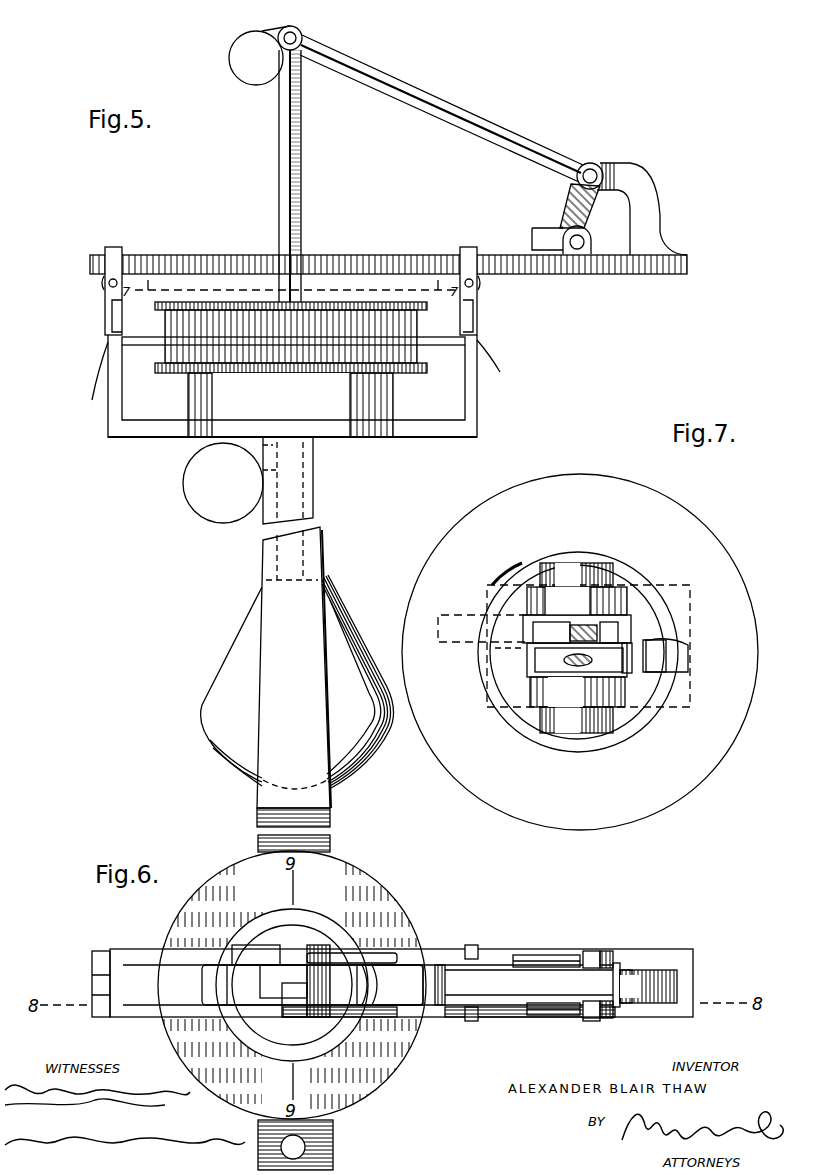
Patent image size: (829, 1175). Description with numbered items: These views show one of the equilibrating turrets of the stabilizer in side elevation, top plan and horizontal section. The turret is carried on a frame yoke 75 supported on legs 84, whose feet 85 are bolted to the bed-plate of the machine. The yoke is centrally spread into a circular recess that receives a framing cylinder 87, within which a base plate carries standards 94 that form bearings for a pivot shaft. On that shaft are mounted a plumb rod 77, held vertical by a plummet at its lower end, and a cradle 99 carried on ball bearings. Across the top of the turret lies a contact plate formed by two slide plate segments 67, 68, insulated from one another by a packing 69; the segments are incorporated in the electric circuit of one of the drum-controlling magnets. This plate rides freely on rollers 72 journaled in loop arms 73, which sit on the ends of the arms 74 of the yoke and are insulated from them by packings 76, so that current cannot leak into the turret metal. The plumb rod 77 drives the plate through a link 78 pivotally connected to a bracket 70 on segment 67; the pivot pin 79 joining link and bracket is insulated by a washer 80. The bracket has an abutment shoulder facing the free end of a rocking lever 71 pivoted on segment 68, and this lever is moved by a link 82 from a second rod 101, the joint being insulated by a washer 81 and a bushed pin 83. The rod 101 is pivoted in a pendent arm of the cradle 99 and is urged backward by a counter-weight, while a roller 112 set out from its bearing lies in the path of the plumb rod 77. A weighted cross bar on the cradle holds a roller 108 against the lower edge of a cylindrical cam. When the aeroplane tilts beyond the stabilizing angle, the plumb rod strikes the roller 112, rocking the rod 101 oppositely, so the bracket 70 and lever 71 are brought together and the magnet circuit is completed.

In FIG. 6, the slide plate segment 67 is at (660, 960).
In FIG. 6, the slide plate segment 68 is at (490, 980).
In FIG. 6, the packing 69 is at (440, 1015).
In FIG. 5, the bracket 70 is at (645, 185).
In FIG. 6, the bracket 70 is at (632, 993).
In FIG. 5, the rocking lever 71 is at (568, 208).
In FIG. 6, the rocking lever 71 is at (590, 955).
In FIG. 5, the roller 72 is at (100, 286).
In FIG. 5, the loop arm 73 is at (118, 252).
In FIG. 5, the arm 74 is at (119, 374).
In FIG. 5, the frame yoke 75 is at (448, 426).
In FIG. 5, the packing 76 is at (110, 325).
In FIG. 5, the plumb rod 77 is at (288, 172).
In FIG. 7, the plumb rod 77 is at (578, 668).
In FIG. 5, the link 78 is at (472, 125).
In FIG. 6, the link 78 is at (550, 1017).
In FIG. 5, the pivot pin 79 is at (577, 179).
In FIG. 6, the pivot pin 79 is at (593, 1022).
In FIG. 6, the washer 80 is at (616, 1010).
In FIG. 6, the washer 81 is at (620, 968).
In FIG. 6, the link 82 is at (550, 958).
In FIG. 6, the pin 83 is at (605, 957).
In FIG. 5, the leg 84 is at (290, 632).
In FIG. 5, the foot 85 is at (262, 817).
In FIG. 5, the framing cylinder 87 is at (200, 399).
In FIG. 7, the standard 94 is at (585, 560).
In FIG. 7, the cradle 99 is at (500, 660).
In FIG. 7, the second rod 101 is at (556, 630).
In FIG. 7, the roller 108 is at (668, 650).
In FIG. 7, the roller 112 is at (628, 650).